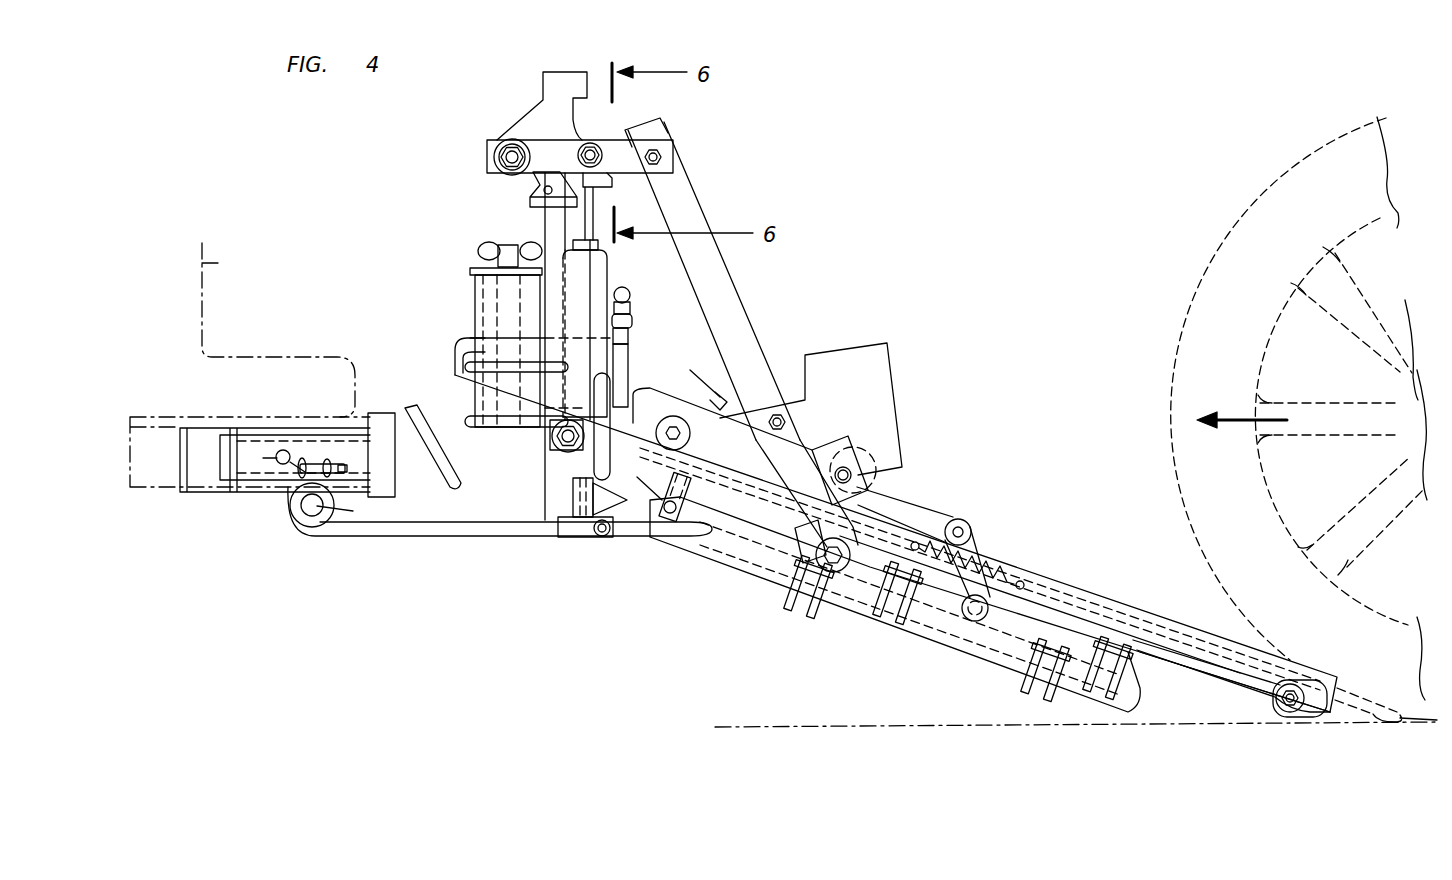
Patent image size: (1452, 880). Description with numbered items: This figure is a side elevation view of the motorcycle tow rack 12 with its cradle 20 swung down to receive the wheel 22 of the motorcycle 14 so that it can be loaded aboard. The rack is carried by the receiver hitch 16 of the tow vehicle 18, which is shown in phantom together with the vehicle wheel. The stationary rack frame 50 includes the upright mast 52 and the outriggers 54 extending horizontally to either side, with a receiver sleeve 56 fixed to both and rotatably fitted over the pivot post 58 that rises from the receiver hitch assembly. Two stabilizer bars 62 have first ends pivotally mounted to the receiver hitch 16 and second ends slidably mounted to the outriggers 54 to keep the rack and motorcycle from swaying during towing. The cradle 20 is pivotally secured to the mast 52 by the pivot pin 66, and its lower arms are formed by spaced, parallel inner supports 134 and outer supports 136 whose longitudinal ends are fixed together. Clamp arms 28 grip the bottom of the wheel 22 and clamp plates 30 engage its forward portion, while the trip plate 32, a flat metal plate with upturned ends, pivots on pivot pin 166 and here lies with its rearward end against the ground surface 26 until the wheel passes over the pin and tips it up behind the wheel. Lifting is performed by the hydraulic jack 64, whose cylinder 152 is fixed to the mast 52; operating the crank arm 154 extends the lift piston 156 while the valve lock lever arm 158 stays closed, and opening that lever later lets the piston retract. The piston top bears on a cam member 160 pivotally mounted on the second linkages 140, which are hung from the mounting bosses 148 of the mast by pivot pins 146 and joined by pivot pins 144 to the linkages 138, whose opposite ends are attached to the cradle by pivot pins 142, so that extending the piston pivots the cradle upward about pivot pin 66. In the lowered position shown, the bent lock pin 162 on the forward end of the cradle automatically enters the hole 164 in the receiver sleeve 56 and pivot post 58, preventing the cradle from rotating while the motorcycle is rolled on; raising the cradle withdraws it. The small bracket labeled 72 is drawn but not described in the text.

The motorcycle tow rack 12 is at (389, 220).
The motorcycle 14 is at (1256, 176).
The receiver hitch 16 is at (163, 487).
The tow vehicle 18 is at (218, 263).
The cradle 20 is at (1087, 572).
The wheel 22 is at (1210, 263).
The ground surface 26 is at (785, 722).
The clamp arm 28 is at (980, 660).
The clamp plate 30 is at (885, 370).
The trip plate 32 is at (1347, 712).
The rack frame 50 is at (530, 223).
The mast 52 is at (548, 85).
The outrigger 54 is at (605, 450).
The receiver sleeve 56 is at (457, 390).
The pivot post 58 is at (495, 288).
The stabilizer bar 62 is at (392, 537).
The hydraulic jack 64 is at (600, 270).
The pivot pin 66 is at (568, 446).
The bracket 72 is at (688, 535).
The inner support 134 is at (1158, 627).
The outer support 136 is at (1183, 690).
The linkage 138 is at (722, 297).
The second linkage 140 is at (633, 133).
The pivot pin 142 is at (810, 590).
The pivot pin 144 is at (658, 153).
The pivot pin 146 is at (502, 157).
The mounting boss 148 is at (528, 122).
The cylinder 152 is at (600, 322).
The crank arm 154 is at (630, 294).
The lift piston 156 is at (593, 200).
The valve lock lever arm 158 is at (592, 532).
The cam member 160 is at (607, 182).
The lock pin 162 is at (457, 343).
The hole 164 is at (492, 312).
The pivot pin 166 is at (1283, 713).